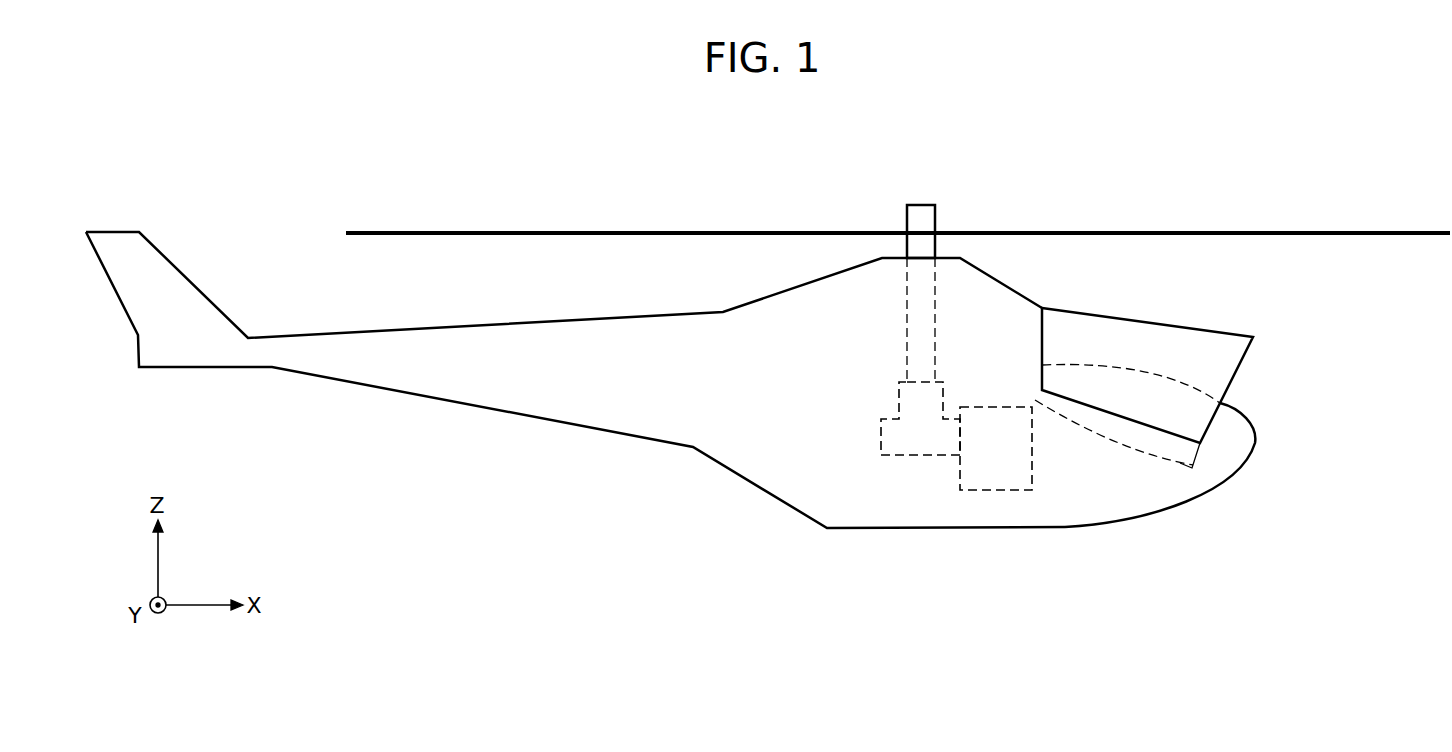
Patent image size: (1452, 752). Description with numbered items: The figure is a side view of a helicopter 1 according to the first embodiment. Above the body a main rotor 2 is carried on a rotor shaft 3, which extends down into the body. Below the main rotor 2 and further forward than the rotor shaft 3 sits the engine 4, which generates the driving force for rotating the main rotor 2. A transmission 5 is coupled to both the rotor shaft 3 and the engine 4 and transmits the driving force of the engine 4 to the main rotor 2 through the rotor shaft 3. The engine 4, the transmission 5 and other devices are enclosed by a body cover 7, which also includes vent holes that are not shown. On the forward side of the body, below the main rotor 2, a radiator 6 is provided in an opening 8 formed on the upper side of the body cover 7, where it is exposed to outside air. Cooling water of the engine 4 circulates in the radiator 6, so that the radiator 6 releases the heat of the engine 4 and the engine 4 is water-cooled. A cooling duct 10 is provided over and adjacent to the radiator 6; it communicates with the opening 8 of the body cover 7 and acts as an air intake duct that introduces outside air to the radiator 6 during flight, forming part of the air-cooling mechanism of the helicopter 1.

The helicopter 1 is at (416, 440).
The main rotor 2 is at (1209, 232).
The rotor shaft 3 is at (919, 203).
The engine 4 is at (997, 492).
The transmission 5 is at (920, 457).
The radiator 6 is at (1097, 437).
The body cover 7 is at (1256, 452).
The opening 8 is at (1190, 463).
The cooling duct 10 is at (1248, 357).